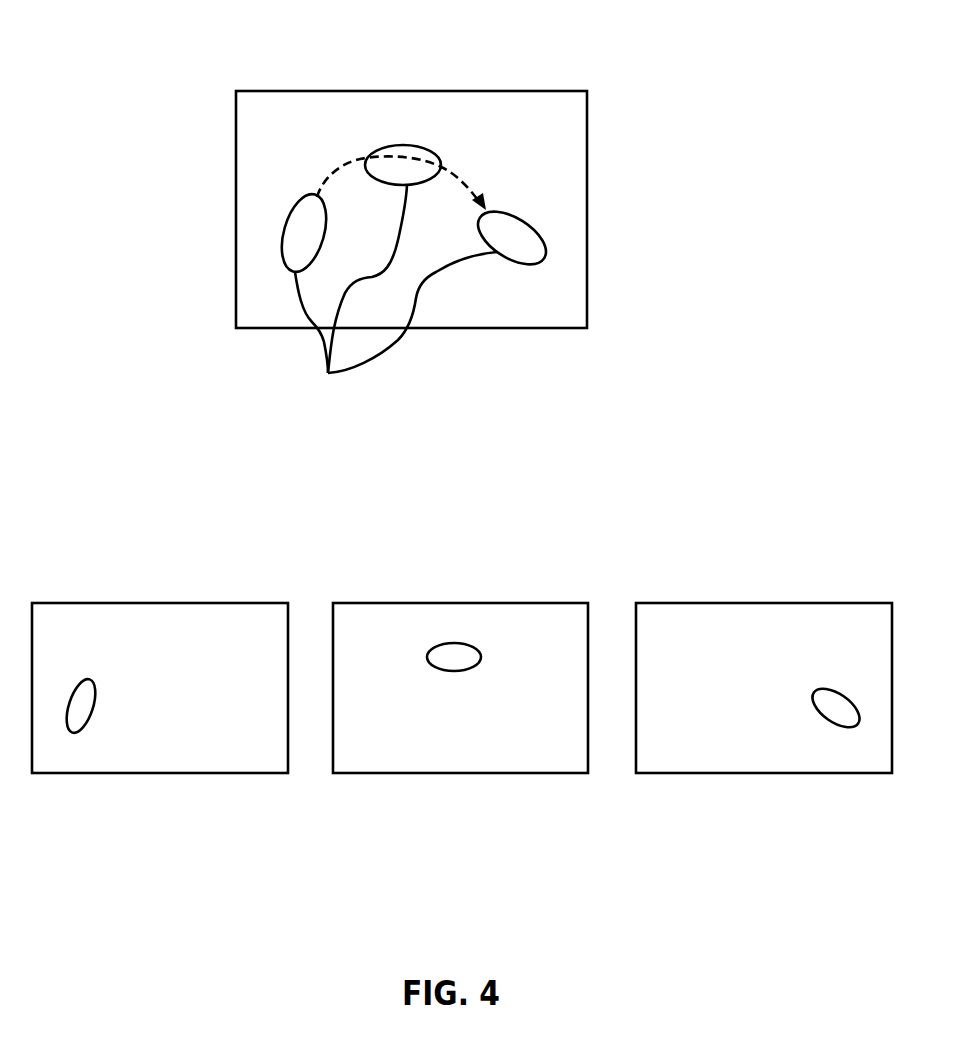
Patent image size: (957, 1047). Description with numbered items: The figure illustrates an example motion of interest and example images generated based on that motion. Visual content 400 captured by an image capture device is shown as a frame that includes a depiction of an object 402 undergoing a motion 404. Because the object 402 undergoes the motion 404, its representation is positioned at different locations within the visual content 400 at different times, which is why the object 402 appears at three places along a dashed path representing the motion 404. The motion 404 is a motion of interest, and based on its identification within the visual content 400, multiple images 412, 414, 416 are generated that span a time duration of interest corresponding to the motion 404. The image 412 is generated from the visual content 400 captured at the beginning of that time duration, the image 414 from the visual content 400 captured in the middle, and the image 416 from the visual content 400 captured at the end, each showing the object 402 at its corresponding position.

The visual content 400 is at (523, 32).
The object 402 is at (389, 280).
The motion 404 is at (350, 165).
The image 412 is at (160, 665).
The image 414 is at (460, 665).
The image 416 is at (764, 665).